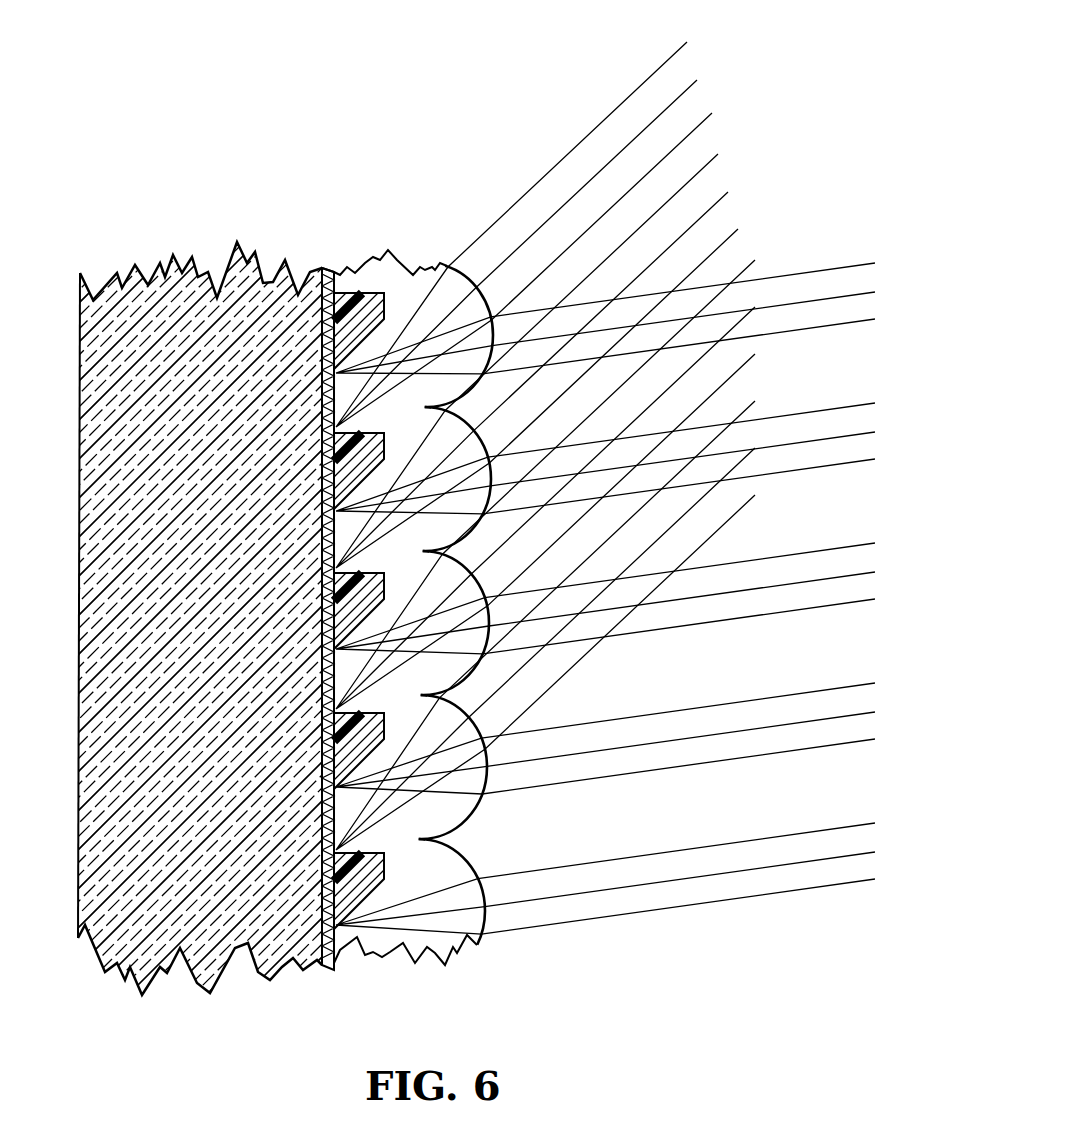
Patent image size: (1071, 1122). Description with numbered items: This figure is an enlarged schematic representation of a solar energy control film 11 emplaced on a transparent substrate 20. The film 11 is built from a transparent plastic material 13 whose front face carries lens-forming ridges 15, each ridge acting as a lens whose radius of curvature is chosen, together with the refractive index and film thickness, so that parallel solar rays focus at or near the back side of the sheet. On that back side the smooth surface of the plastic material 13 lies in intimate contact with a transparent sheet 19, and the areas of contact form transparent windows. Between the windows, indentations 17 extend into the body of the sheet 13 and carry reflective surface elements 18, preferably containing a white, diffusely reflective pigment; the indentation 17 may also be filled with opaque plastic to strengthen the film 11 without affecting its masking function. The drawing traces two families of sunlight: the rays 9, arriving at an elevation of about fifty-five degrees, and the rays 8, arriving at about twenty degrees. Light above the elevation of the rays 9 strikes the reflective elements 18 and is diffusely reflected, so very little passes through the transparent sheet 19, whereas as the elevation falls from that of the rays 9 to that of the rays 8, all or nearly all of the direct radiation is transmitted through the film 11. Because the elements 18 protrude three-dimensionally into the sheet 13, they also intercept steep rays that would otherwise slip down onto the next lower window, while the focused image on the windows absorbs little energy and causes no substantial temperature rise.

The rays 8 is at (813, 438).
The rays 9 is at (690, 80).
The solar energy control film 11 is at (364, 264).
The transparent plastic material 13 is at (437, 266).
The ridges 15 is at (455, 852).
The indentation 17 is at (367, 852).
The elements 18 is at (360, 878).
The transparent sheet 19 is at (333, 545).
The transparent substrate 20 is at (95, 381).